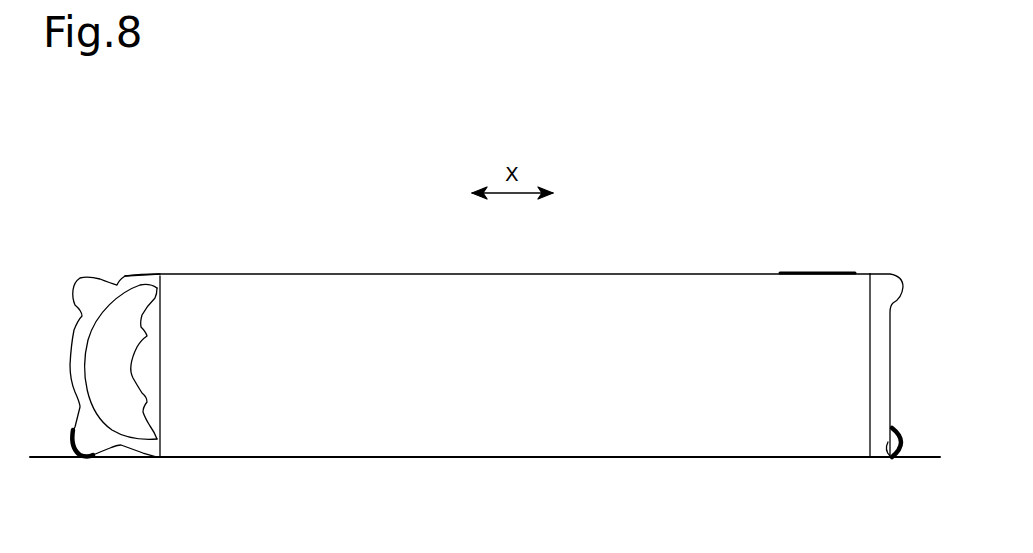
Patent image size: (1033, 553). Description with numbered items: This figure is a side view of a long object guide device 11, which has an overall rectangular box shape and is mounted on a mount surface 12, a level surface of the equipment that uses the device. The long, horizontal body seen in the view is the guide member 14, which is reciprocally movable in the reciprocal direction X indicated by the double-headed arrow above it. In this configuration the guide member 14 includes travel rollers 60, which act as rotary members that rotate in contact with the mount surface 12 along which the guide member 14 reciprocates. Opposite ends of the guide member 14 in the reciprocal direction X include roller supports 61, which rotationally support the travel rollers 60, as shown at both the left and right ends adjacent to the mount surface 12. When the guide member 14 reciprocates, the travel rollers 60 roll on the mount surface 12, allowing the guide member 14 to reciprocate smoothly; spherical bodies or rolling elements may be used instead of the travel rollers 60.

The long object guide device 11 is at (849, 209).
The mount surface 12 is at (928, 457).
The guide member 14 is at (222, 274).
The travel rollers 60 is at (70, 442).
The roller supports 61 is at (88, 443).